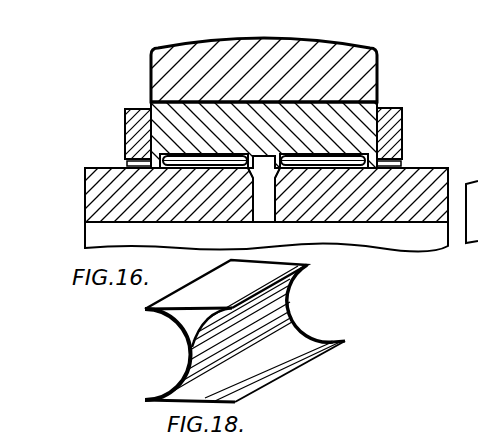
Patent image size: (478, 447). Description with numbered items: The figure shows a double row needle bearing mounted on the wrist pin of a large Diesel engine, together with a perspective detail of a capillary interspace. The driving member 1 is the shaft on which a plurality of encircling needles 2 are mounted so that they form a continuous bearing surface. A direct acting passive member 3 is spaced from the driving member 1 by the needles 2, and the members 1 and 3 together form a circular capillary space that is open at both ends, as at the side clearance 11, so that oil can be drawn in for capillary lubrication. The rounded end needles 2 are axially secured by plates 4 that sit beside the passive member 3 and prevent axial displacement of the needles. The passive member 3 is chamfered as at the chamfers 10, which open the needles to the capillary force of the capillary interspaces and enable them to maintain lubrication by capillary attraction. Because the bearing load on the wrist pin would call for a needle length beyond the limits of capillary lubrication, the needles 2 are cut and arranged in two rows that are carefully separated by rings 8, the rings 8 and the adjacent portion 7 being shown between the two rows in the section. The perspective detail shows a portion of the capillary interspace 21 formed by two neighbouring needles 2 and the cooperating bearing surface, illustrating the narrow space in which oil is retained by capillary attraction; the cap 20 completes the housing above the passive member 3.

In FIG. 16, the driving member 1 is at (438, 182).
In FIG. 16, the needles 2 is at (213, 164).
In FIG. 16, the passive member 3 is at (362, 112).
In FIG. 16, the plates 4 is at (138, 122).
In FIG. 16, the partition 7 is at (268, 206).
In FIG. 16, the rings 8 is at (270, 170).
In FIG. 16, the chamfers 10 is at (127, 163).
In FIG. 16, the side clearance 11 is at (160, 158).
In FIG. 16, the cap 20 is at (330, 58).
In FIG. 18, the capillary interspace 21 is at (197, 392).